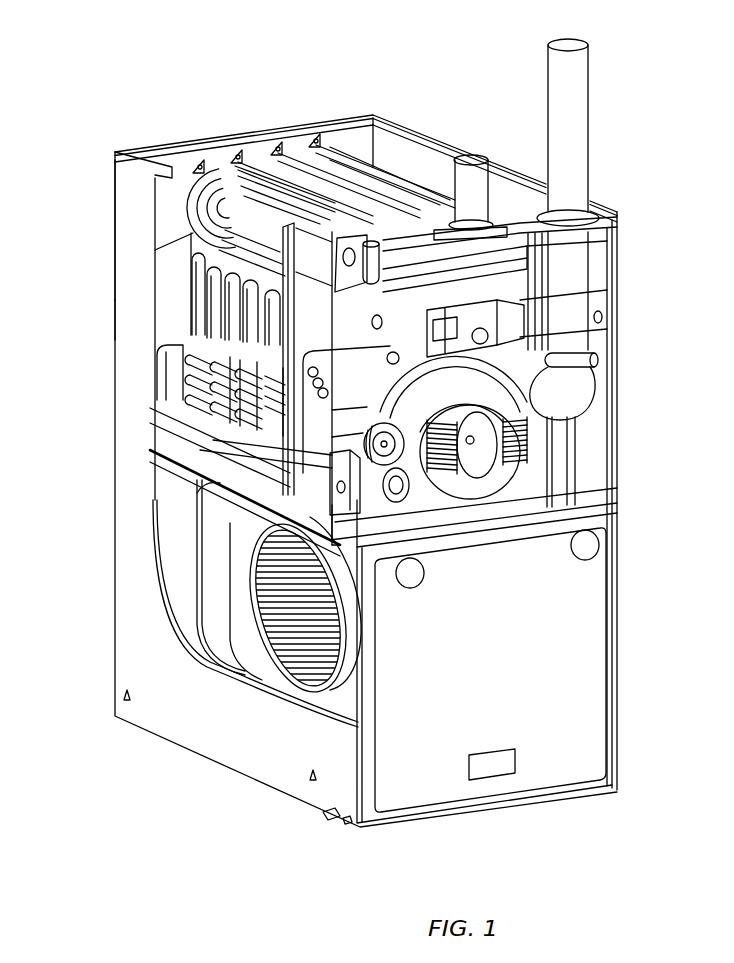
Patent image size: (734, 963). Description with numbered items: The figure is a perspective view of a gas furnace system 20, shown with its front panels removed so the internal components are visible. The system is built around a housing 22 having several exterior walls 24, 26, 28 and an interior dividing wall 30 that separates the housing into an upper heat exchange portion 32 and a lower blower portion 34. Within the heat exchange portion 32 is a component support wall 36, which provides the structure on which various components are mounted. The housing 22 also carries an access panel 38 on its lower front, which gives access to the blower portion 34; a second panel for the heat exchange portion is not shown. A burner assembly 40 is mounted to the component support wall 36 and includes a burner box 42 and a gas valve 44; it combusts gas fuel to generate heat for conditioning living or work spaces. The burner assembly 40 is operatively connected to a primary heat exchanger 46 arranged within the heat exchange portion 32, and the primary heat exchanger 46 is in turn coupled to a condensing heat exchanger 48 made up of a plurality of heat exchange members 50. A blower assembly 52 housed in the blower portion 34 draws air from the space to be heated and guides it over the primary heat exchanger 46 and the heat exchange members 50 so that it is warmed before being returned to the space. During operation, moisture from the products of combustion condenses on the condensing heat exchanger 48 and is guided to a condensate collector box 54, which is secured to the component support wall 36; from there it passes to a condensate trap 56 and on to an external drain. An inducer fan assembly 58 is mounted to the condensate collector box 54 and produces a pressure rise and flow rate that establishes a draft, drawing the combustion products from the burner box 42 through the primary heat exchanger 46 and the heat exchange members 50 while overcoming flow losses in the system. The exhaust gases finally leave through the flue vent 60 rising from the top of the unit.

The gas furnace system 20 is at (99, 52).
The housing 22 is at (98, 317).
The exterior wall 24 is at (130, 395).
The exterior wall 26 is at (255, 128).
The exterior wall 28 is at (414, 127).
The interior dividing wall 30 is at (220, 487).
The heat exchange portion 32 is at (165, 192).
The blower portion 34 is at (159, 577).
The component support wall 36 is at (360, 232).
The access panel 38 is at (573, 710).
The burner assembly 40 is at (534, 306).
The burner box 42 is at (510, 266).
The gas valve 44 is at (504, 336).
The primary heat exchanger 46 is at (226, 168).
The condensing heat exchanger 48 is at (172, 314).
The heat exchange members 50 is at (205, 413).
The blower assembly 52 is at (246, 641).
The condensate collector box 54 is at (374, 409).
The condensate trap 56 is at (568, 478).
The inducer fan assembly 58 is at (497, 403).
The flue vent 60 is at (574, 137).